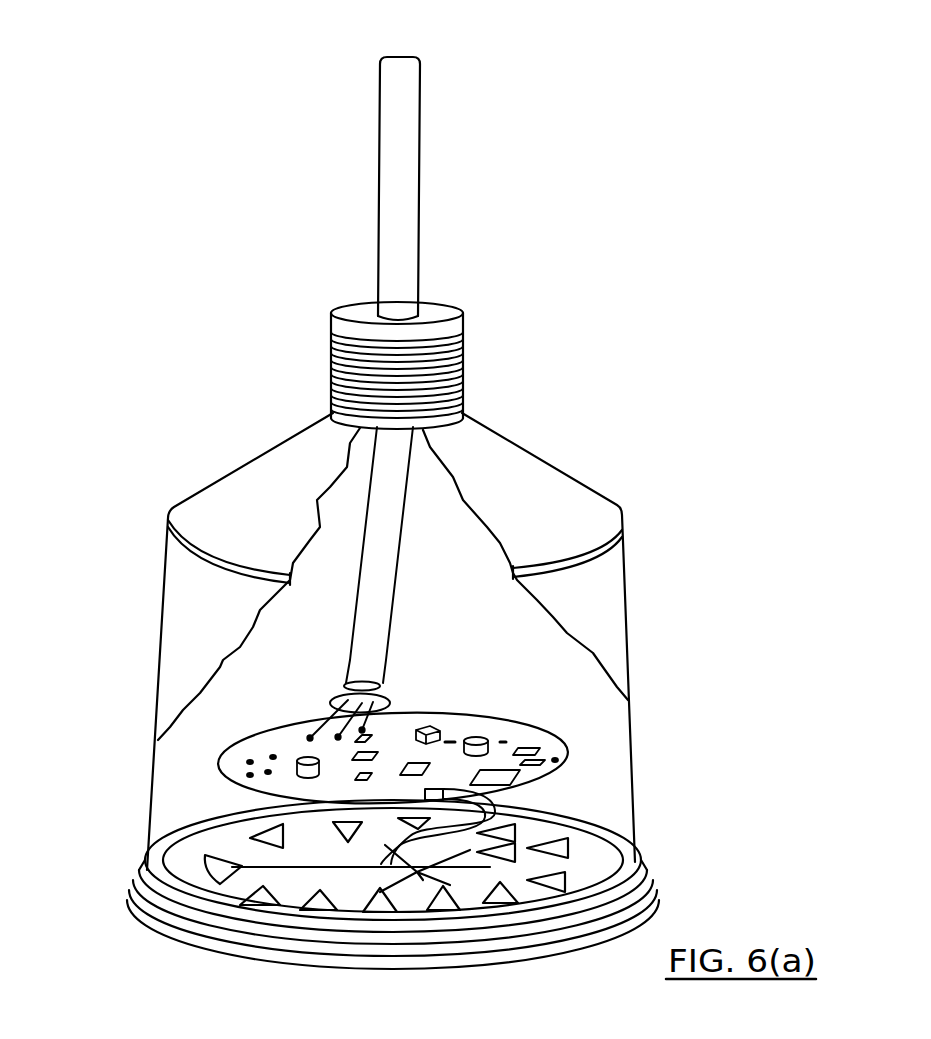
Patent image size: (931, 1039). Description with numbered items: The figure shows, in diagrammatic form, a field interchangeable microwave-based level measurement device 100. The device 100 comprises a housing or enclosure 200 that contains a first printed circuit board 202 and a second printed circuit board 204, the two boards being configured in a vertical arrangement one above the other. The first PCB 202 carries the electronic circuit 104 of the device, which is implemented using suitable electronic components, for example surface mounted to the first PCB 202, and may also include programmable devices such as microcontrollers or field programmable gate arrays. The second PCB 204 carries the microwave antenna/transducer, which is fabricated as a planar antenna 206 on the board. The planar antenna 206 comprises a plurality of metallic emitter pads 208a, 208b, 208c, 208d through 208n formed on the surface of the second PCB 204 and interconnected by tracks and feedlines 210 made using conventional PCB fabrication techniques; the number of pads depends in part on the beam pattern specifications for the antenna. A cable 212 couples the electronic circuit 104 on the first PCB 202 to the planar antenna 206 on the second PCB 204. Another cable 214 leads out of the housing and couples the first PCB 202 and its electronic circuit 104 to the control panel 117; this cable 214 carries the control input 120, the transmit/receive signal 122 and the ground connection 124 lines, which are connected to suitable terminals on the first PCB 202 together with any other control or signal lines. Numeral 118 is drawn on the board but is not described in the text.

The microwave-based level measurement device 100 is at (605, 291).
The electronic circuit 104 is at (518, 740).
The control panel 117 is at (400, 58).
The sensor wire 118 is at (338, 695).
The control input 120 is at (315, 736).
The transmit/receive signal 122 is at (390, 693).
The ground connection 124 is at (400, 712).
The housing 200 is at (633, 578).
The first printed circuit board 202 is at (570, 751).
The second printed circuit board 204 is at (628, 860).
The planar antenna 206 is at (283, 910).
The emitter pad 208a is at (205, 862).
The emitter pad 208b is at (245, 900).
The emitter pad 208c is at (320, 912).
The emitter pad 208d is at (390, 910).
The emitter pad 208n is at (273, 835).
The tracks and feedlines 210 is at (138, 915).
The cable 212 is at (495, 805).
The cable 214 is at (414, 176).